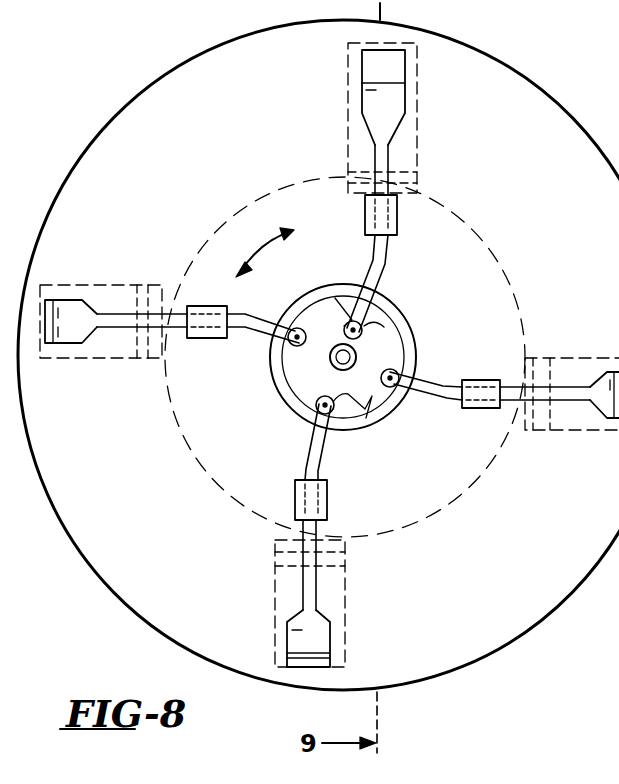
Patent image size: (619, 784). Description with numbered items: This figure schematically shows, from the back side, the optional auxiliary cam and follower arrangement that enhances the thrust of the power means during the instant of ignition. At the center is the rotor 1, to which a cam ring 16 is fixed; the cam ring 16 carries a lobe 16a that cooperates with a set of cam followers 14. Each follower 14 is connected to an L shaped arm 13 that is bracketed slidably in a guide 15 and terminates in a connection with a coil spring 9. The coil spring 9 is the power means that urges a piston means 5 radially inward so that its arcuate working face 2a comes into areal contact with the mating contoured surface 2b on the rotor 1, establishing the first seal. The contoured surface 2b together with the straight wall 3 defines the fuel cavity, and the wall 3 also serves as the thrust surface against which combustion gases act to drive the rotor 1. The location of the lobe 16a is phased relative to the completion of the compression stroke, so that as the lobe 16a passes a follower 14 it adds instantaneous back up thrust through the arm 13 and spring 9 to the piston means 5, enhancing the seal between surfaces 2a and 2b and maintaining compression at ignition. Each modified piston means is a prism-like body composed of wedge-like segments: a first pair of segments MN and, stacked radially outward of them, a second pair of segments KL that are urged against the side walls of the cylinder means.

The rotor 1 is at (499, 263).
The working face 2a is at (528, 380).
The contoured surface 2b is at (358, 195).
The straight wall 3 is at (330, 192).
The piston means 5 is at (362, 145).
The coil spring 9 is at (375, 100).
The L shaped arm 13 is at (385, 125).
The cam follower 14 is at (366, 404).
The guide 15 is at (398, 221).
The cam ring 16 is at (286, 377).
The lobe 16a is at (391, 323).
The second pair of segments KL is at (416, 172).
The first pair of segments MN is at (418, 183).